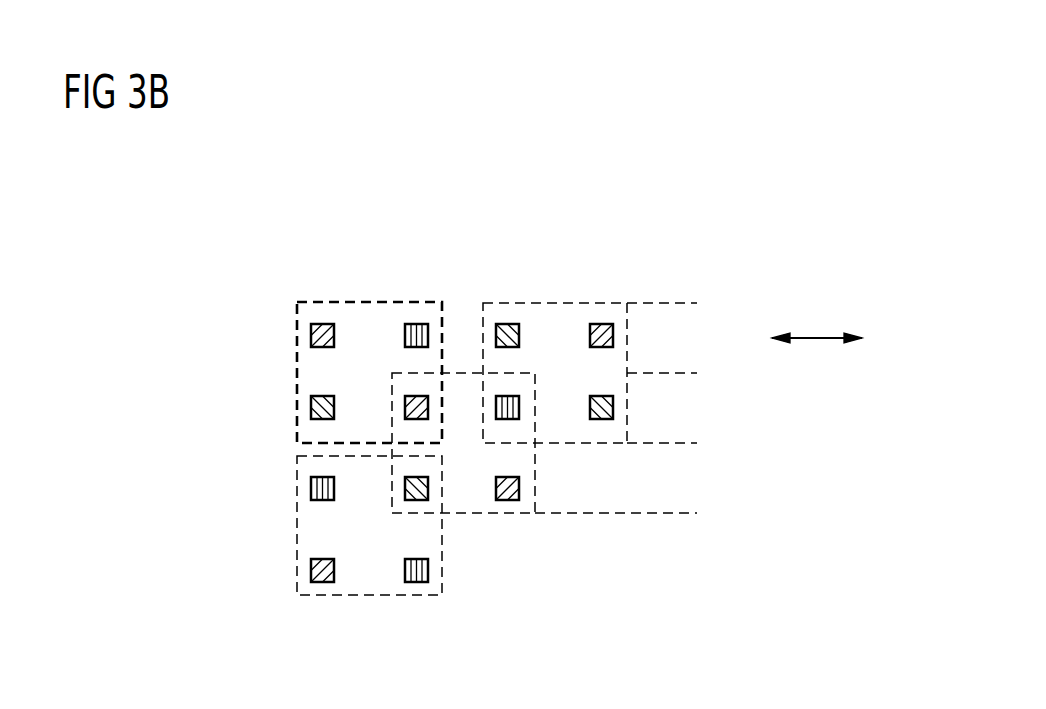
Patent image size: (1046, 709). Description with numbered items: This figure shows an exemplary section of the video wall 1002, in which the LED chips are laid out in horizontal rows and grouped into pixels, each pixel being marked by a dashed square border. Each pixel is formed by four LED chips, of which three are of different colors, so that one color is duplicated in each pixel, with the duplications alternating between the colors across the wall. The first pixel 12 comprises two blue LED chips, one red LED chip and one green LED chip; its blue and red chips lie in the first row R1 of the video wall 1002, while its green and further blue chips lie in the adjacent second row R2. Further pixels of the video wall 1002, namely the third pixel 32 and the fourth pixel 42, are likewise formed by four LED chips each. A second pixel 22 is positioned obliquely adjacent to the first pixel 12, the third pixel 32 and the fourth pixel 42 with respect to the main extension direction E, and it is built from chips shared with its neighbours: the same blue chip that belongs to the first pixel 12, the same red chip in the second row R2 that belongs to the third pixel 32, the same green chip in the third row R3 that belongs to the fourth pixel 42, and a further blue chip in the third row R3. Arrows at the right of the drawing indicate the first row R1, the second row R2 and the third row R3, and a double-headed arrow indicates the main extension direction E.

The first pixel 12 is at (374, 320).
The second pixel 22 is at (460, 384).
The third pixel 32 is at (577, 310).
The fourth pixel 42 is at (368, 567).
The video wall 1002 is at (640, 226).
The main extension direction E is at (817, 338).
The first row R1 is at (712, 350).
The second row R2 is at (712, 420).
The third row R3 is at (712, 490).